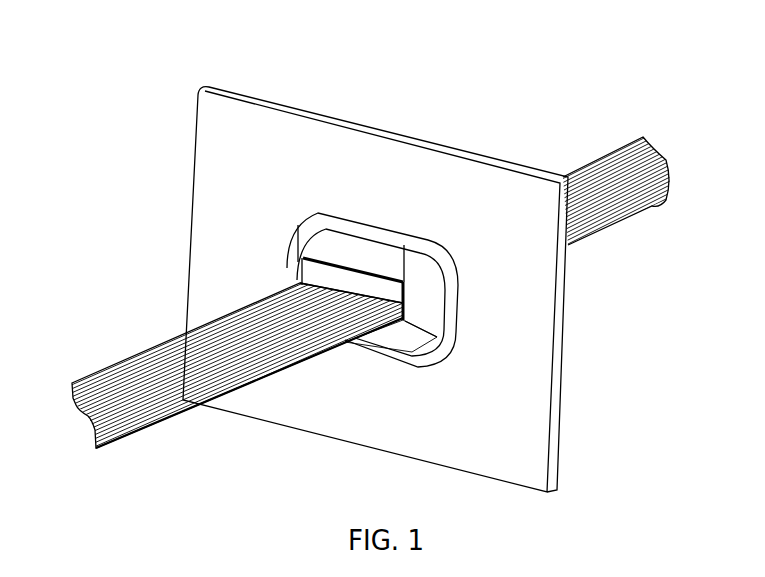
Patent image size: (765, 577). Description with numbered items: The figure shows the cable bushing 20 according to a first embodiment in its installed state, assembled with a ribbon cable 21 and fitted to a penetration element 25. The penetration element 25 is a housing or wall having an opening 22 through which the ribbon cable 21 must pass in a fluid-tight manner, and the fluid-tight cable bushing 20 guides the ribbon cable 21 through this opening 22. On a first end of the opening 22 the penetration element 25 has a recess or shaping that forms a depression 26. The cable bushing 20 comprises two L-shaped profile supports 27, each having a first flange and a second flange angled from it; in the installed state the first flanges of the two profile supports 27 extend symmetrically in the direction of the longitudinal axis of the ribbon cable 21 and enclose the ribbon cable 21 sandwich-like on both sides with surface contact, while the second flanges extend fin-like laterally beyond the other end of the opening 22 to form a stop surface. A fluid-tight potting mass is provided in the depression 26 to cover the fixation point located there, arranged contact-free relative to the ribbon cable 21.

The cable bushing 20 is at (378, 255).
The ribbon cable 21 is at (172, 352).
The opening 22 is at (348, 271).
The penetration element 25 is at (226, 168).
The depression 26 is at (350, 252).
The profile supports 27 is at (310, 268).